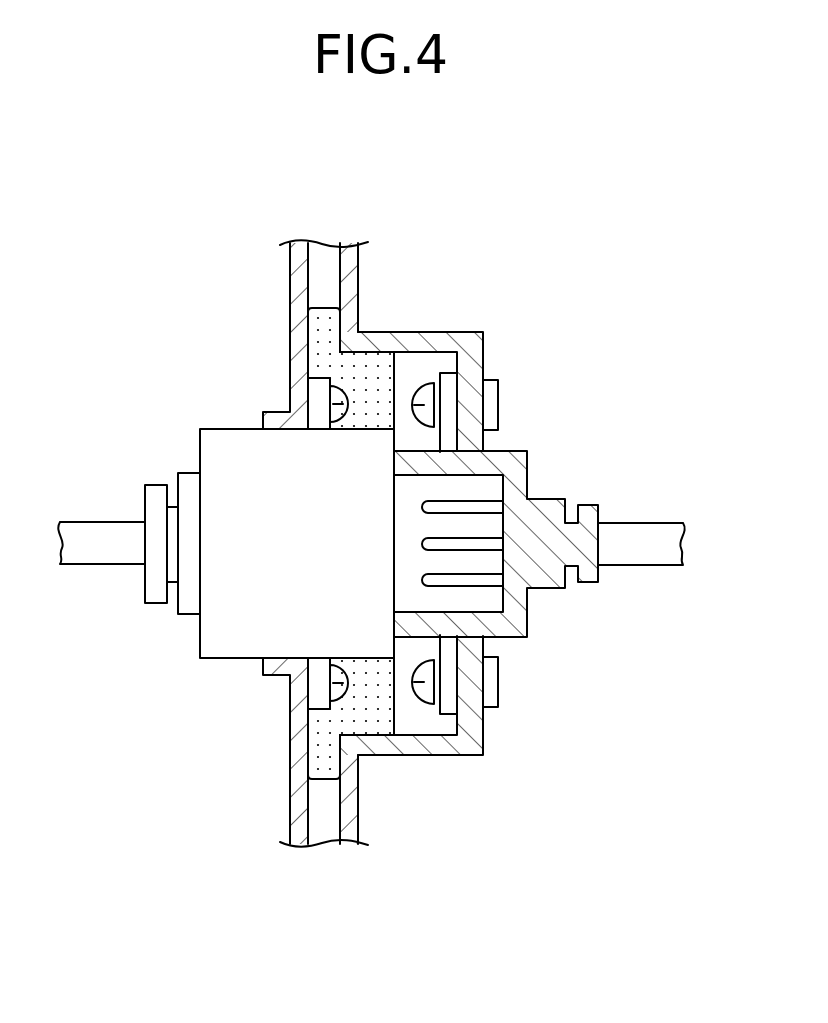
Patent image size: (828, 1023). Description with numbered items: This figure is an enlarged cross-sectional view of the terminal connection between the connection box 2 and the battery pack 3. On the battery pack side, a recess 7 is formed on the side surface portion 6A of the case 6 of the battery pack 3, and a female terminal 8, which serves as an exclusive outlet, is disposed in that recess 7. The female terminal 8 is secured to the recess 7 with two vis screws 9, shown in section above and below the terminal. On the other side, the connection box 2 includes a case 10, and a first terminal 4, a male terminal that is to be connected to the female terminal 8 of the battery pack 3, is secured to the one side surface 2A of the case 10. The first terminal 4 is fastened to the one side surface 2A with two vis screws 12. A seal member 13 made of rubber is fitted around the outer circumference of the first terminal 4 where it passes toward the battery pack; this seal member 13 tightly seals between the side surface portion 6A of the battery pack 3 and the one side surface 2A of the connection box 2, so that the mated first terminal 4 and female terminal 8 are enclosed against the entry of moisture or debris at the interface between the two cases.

The connection box 2 is at (208, 215).
The one side surface 2A is at (302, 256).
The battery pack 3 is at (590, 217).
The first terminal 4 is at (220, 640).
The case 6 is at (350, 820).
The side surface portion 6A is at (346, 257).
The recess 7 is at (441, 356).
The female terminal 8 is at (520, 475).
The vis screw 9 is at (425, 405).
The case 10 is at (313, 817).
The vis screw 12 is at (345, 393).
The seal member 13 is at (327, 330).